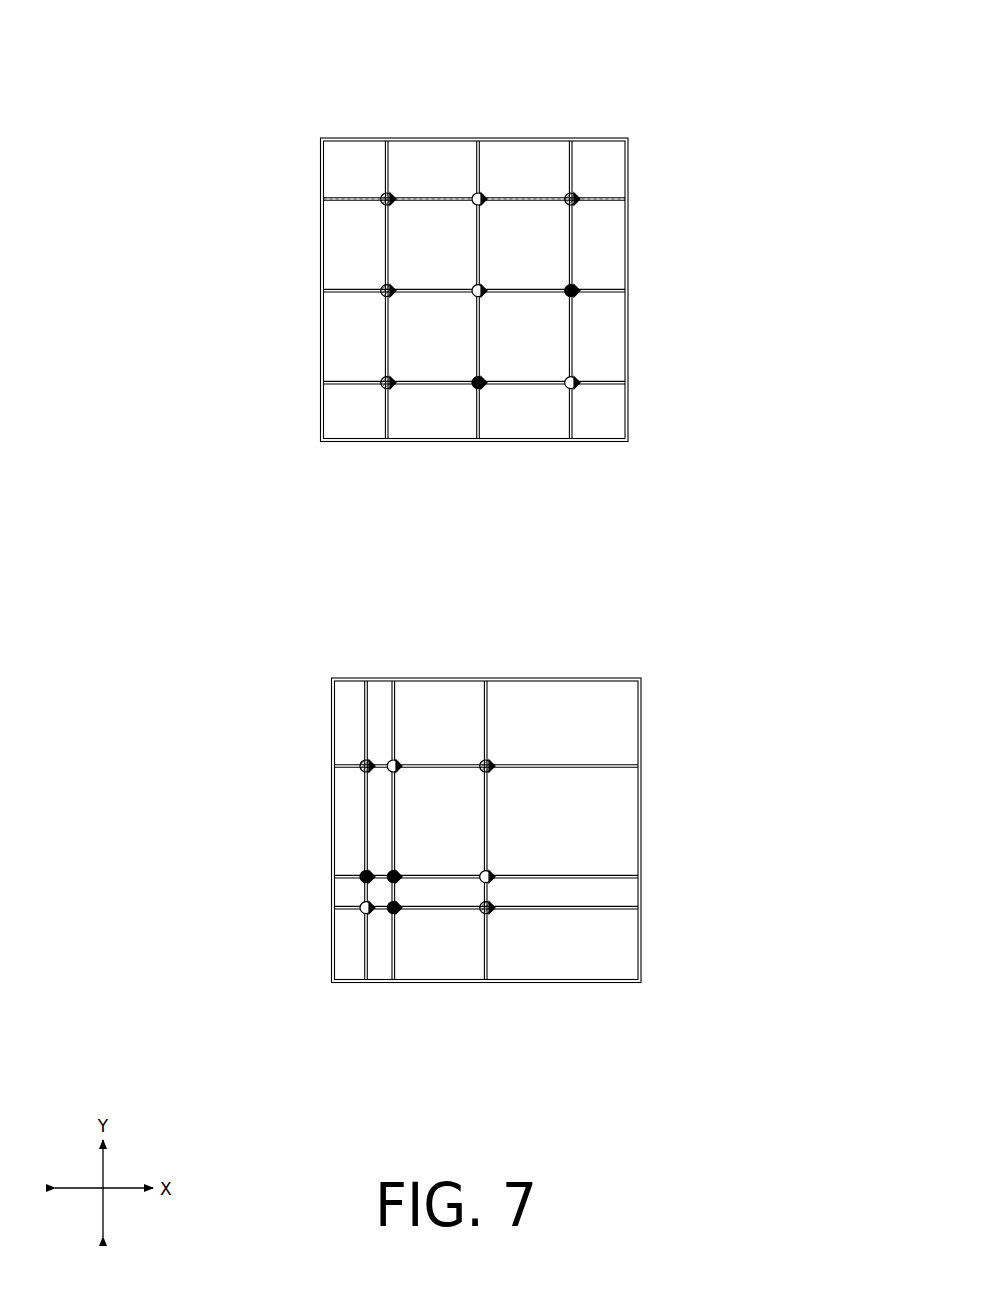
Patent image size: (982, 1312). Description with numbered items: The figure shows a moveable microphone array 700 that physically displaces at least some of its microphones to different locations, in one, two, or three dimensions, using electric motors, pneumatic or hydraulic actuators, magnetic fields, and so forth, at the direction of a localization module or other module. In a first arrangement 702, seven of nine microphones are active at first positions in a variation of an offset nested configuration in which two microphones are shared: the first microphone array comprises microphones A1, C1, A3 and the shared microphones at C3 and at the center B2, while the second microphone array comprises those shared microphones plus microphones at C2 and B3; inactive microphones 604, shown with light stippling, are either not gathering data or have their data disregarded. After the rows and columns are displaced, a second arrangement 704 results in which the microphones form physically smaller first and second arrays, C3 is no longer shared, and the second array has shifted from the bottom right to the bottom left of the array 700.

The moveable microphone array 700 is at (743, 39).
The first arrangement 702 is at (309, 95).
The second arrangement 704 is at (316, 634).
The inactive microphone 604 is at (382, 287).